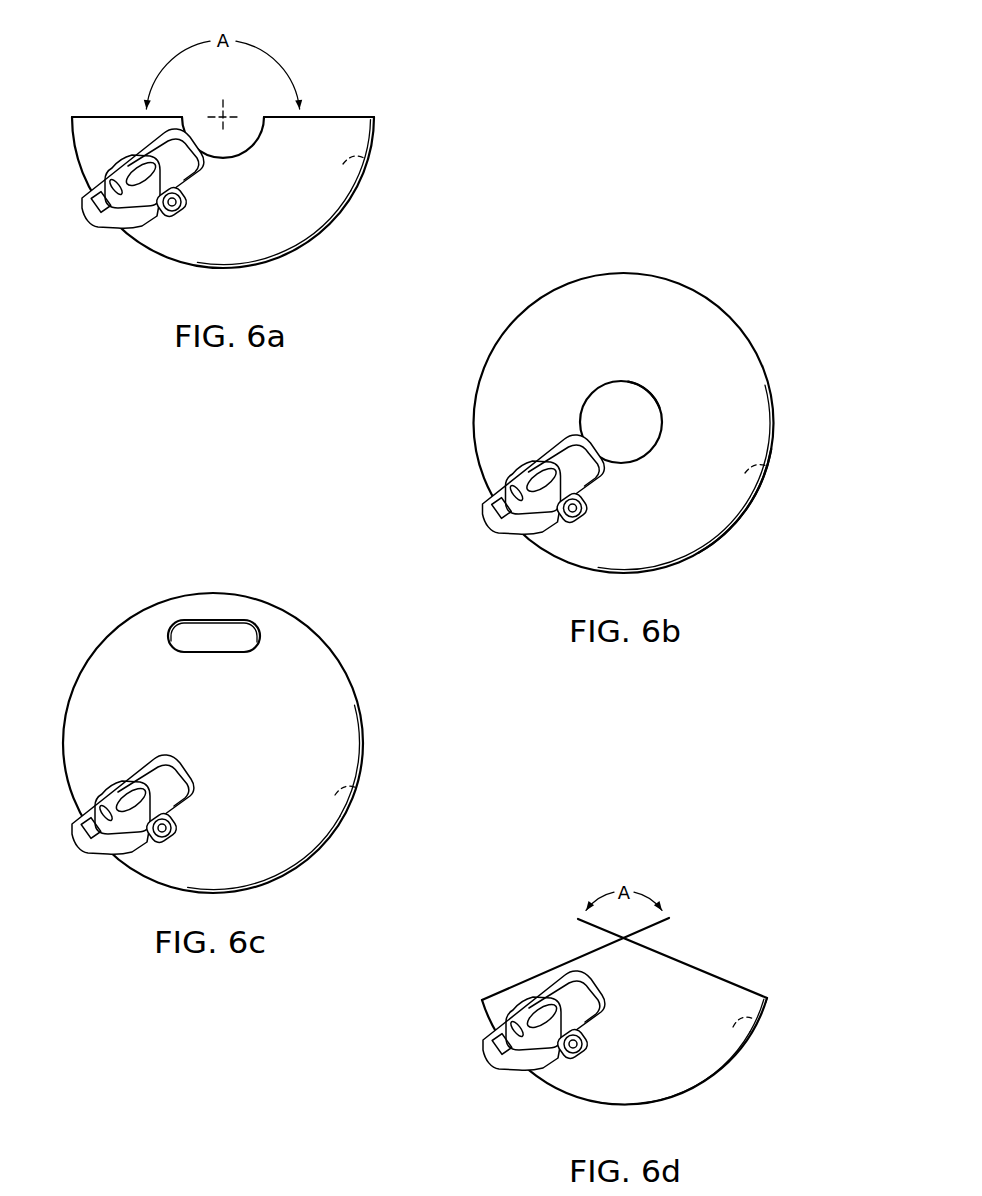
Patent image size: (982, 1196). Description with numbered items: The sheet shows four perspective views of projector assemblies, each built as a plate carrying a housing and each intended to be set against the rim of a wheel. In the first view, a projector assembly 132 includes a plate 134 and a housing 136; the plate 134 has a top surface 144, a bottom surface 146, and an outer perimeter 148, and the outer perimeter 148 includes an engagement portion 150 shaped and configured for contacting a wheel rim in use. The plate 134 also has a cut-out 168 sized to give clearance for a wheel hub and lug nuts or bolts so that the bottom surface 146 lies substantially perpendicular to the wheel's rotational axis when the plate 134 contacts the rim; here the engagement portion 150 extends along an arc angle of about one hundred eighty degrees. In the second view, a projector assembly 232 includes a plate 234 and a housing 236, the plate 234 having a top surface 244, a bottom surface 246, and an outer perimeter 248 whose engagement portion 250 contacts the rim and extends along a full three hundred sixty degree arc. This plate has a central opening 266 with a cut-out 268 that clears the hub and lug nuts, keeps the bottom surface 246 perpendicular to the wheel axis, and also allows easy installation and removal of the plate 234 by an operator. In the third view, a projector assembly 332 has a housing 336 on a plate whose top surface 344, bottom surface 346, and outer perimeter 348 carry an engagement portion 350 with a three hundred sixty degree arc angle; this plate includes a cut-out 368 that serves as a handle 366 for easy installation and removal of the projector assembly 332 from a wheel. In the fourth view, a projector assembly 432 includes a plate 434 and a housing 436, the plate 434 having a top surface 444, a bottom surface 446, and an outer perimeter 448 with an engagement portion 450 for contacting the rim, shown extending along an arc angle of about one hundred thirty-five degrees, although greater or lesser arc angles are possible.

In FIG. 6A, the projector assembly 132 is at (255, 156).
In FIG. 6A, the plate 134 is at (223, 91).
In FIG. 6A, the housing 136 is at (143, 212).
In FIG. 6A, the top surface 144 is at (355, 132).
In FIG. 6A, the bottom surface 146 is at (372, 161).
In FIG. 6A, the outer perimeter 148 is at (255, 192).
In FIG. 6A, the engagement portion 150 is at (323, 233).
In FIG. 6A, the cut-out 168 is at (241, 143).
In FIG. 6B, the projector assembly 232 is at (447, 414).
In FIG. 6B, the plate 234 is at (643, 423).
In FIG. 6B, the housing 236 is at (544, 518).
In FIG. 6B, the top surface 244 is at (752, 443).
In FIG. 6B, the bottom surface 246 is at (772, 470).
In FIG. 6B, the outer perimeter 248 is at (769, 507).
In FIG. 6B, the engagement portion 250 is at (725, 540).
In FIG. 6B, the central opening 266 is at (609, 404).
In FIG. 6B, the cut-out 268 is at (634, 392).
In FIG. 6C, the projector assembly 332 is at (245, 717).
In FIG. 6C, the housing 336 is at (133, 839).
In FIG. 6C, the top surface 344 is at (343, 760).
In FIG. 6C, the bottom surface 346 is at (358, 788).
In FIG. 6C, the outer perimeter 348 is at (245, 743).
In FIG. 6C, the engagement portion 350 is at (313, 860).
In FIG. 6C, the handle 366 is at (214, 603).
In FIG. 6C, the cut-out 368 is at (220, 645).
In FIG. 6D, the projector assembly 432 is at (649, 992).
In FIG. 6D, the plate 434 is at (624, 953).
In FIG. 6D, the housing 436 is at (544, 1053).
In FIG. 6D, the top surface 444 is at (731, 991).
In FIG. 6D, the bottom surface 446 is at (757, 1026).
In FIG. 6D, the outer perimeter 448 is at (648, 1063).
In FIG. 6D, the engagement portion 450 is at (698, 1088).